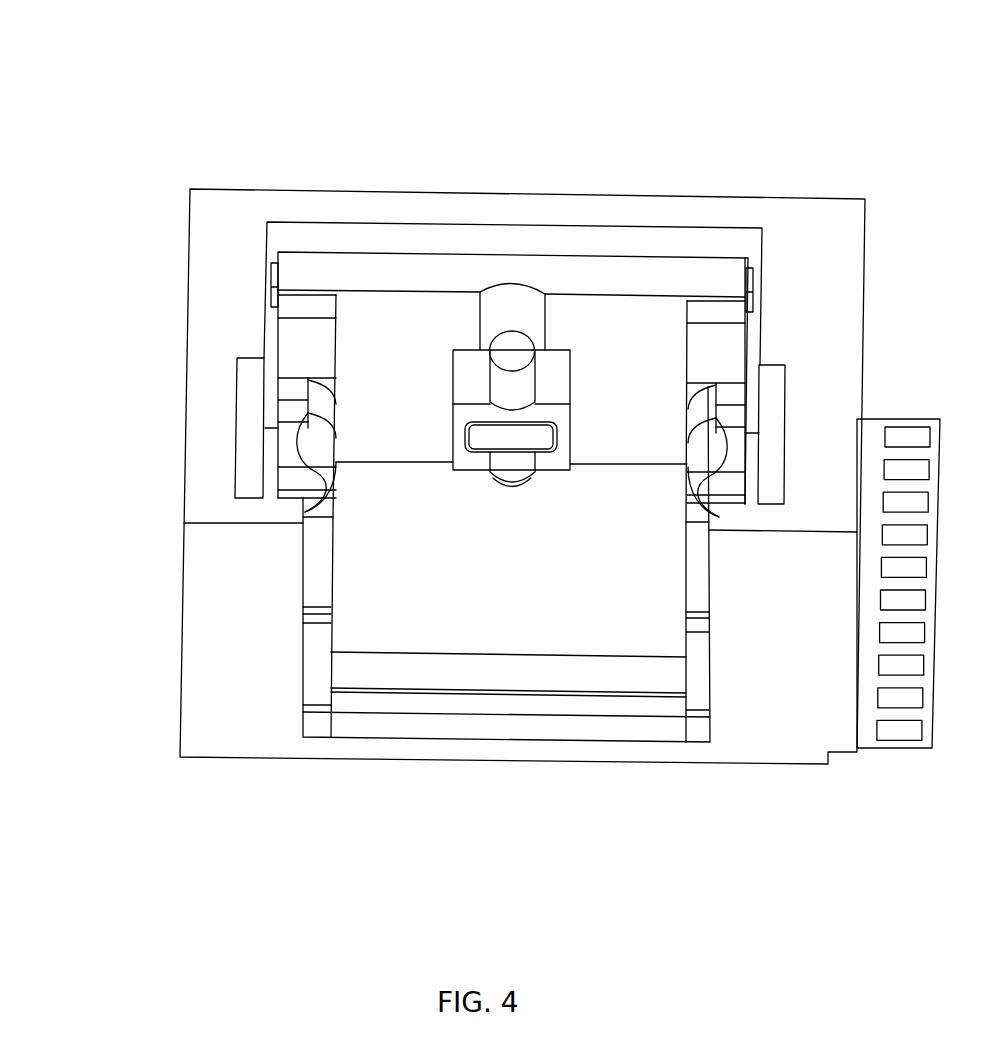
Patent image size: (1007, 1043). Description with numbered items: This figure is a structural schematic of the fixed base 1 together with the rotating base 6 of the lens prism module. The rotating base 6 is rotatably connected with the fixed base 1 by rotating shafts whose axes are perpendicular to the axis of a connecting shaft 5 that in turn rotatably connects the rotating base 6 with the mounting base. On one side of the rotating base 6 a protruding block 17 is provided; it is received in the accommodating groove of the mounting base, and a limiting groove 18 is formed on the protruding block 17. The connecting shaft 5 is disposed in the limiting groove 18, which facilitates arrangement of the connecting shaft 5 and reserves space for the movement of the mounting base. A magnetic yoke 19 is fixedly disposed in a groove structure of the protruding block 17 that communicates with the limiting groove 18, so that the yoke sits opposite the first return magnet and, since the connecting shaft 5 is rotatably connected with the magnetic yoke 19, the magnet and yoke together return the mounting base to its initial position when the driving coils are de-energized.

The fixed base 1 is at (218, 590).
The connecting shaft 5 is at (518, 352).
The rotating base 6 is at (318, 377).
The protruding block 17 is at (473, 368).
The limiting groove 18 is at (537, 438).
The magnetic yoke 19 is at (550, 423).